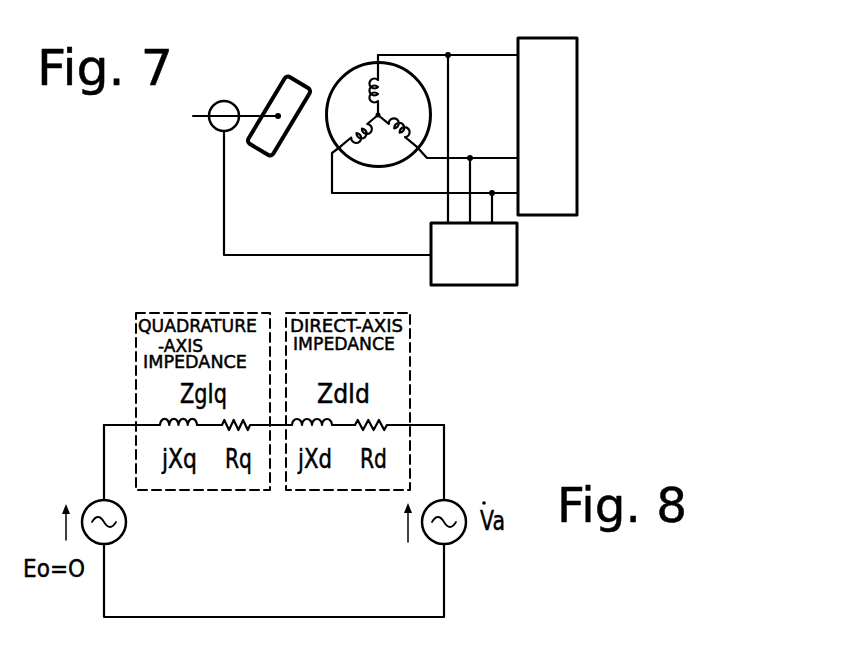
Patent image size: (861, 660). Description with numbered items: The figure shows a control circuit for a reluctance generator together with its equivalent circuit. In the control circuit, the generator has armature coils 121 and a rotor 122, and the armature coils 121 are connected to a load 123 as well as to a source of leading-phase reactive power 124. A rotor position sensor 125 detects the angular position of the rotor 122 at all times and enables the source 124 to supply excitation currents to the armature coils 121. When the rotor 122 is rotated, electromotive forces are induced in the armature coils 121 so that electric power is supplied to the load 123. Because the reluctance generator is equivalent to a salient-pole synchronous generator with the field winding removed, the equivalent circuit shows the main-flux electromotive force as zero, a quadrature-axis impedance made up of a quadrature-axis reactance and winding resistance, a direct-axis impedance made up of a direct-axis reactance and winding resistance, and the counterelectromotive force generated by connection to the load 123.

The armature coils 121 is at (372, 80).
The rotor 122 is at (280, 88).
The load 123 is at (577, 68).
The source of leading-phase reactive power 124 is at (508, 275).
The rotor position sensor 125 is at (217, 131).